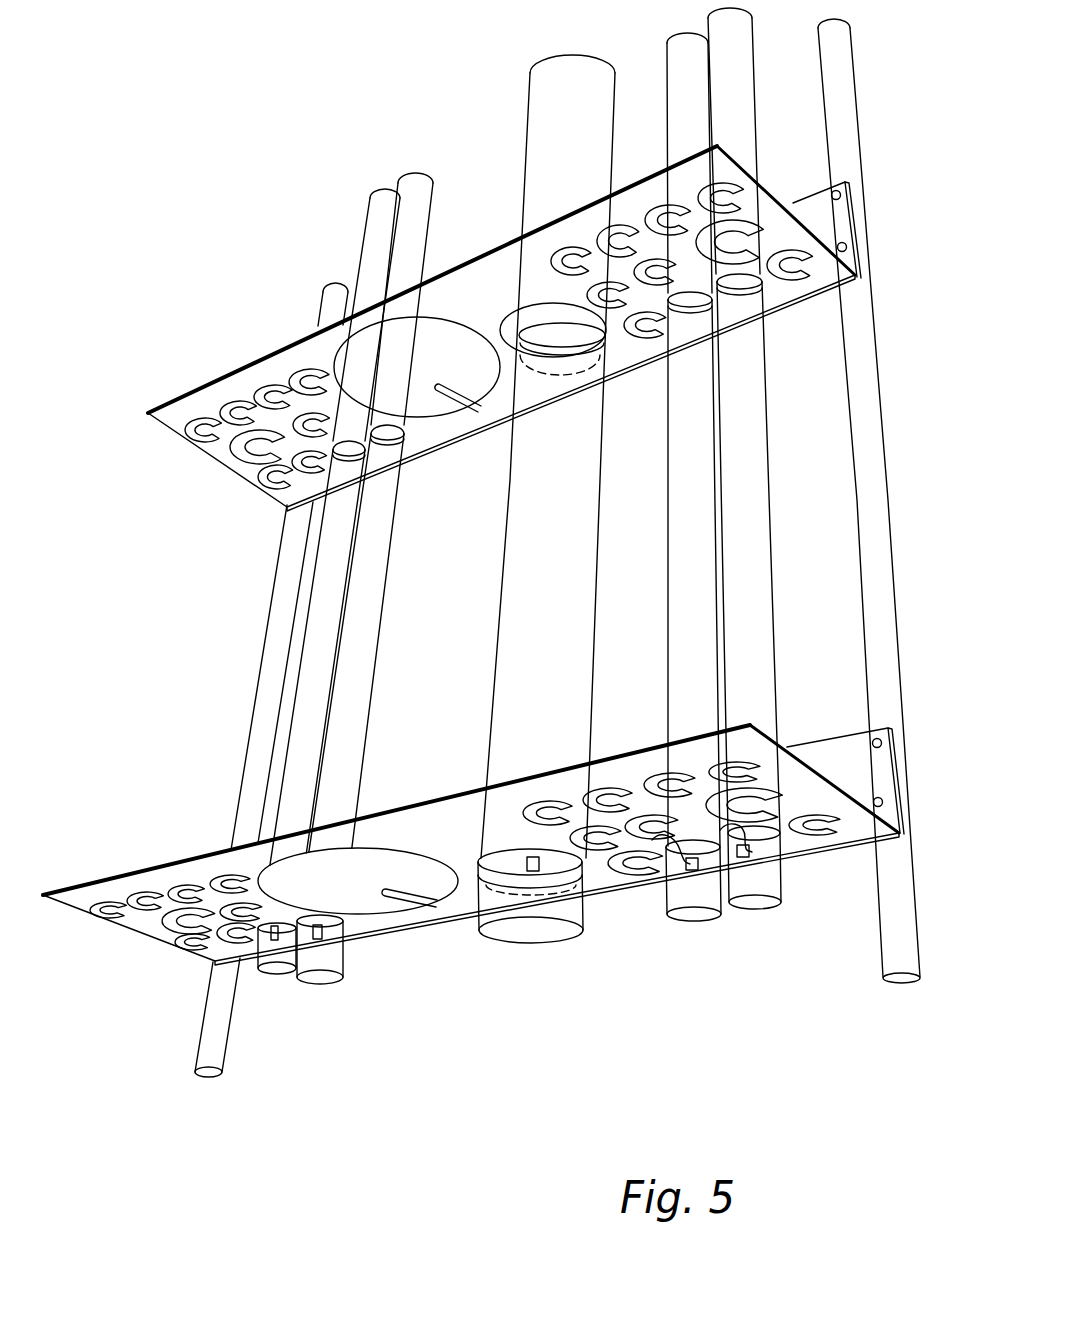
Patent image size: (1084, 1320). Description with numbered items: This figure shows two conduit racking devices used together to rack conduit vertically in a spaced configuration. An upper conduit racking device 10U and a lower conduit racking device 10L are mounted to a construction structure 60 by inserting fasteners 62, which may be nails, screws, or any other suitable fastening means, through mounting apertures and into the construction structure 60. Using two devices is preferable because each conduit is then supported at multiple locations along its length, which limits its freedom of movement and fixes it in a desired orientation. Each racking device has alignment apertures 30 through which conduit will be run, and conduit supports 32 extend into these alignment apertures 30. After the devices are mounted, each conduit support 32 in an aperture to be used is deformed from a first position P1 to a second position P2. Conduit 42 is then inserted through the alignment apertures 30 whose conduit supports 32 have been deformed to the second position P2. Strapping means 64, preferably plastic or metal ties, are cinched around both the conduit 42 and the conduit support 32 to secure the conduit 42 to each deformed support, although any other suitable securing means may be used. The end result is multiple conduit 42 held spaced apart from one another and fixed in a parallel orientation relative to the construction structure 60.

The upper conduit racking device 10U is at (250, 490).
The lower conduit racking device 10L is at (471, 870).
The construction structure 60 is at (898, 544).
The fasteners 62 is at (847, 247).
The alignment apertures 30 is at (288, 848).
The conduit supports 32 is at (577, 843).
The conduit 42 is at (508, 945).
The strapping means 64 is at (278, 934).
The first position P1 is at (393, 895).
The second position P2 is at (535, 942).